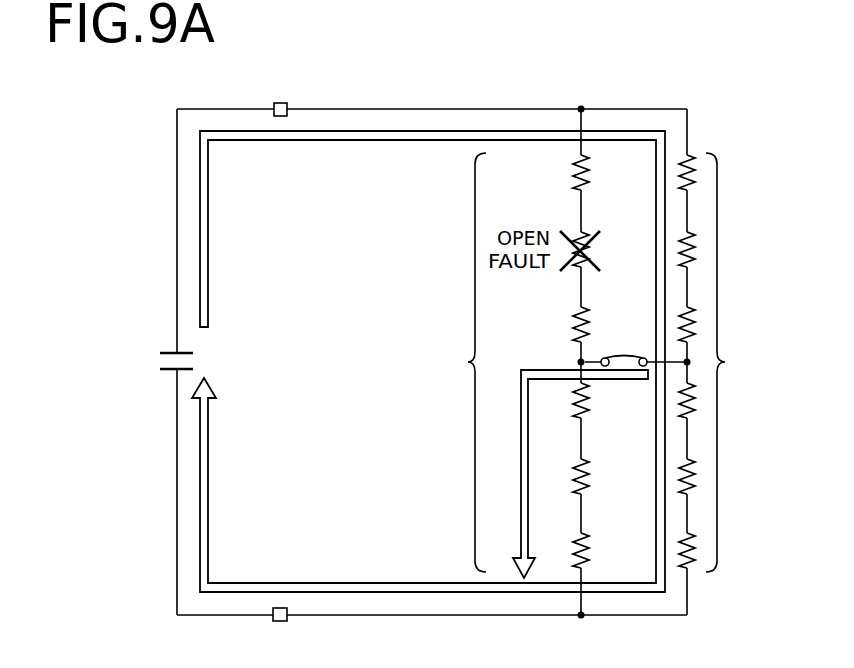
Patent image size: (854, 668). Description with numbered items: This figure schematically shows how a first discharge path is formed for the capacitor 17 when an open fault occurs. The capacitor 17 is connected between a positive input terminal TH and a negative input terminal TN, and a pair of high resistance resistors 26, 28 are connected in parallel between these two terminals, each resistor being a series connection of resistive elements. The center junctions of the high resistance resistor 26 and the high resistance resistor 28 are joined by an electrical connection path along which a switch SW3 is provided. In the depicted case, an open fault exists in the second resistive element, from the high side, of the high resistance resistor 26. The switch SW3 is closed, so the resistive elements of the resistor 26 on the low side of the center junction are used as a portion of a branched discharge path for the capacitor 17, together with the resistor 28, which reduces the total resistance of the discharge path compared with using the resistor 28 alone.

The capacitor 17 is at (172, 352).
The high resistance resistor 26 is at (512, 362).
The high resistance resistor 28 is at (718, 362).
The positive input terminal TH is at (280, 103).
The negative input terminal TN is at (281, 621).
The switch SW3 is at (618, 356).